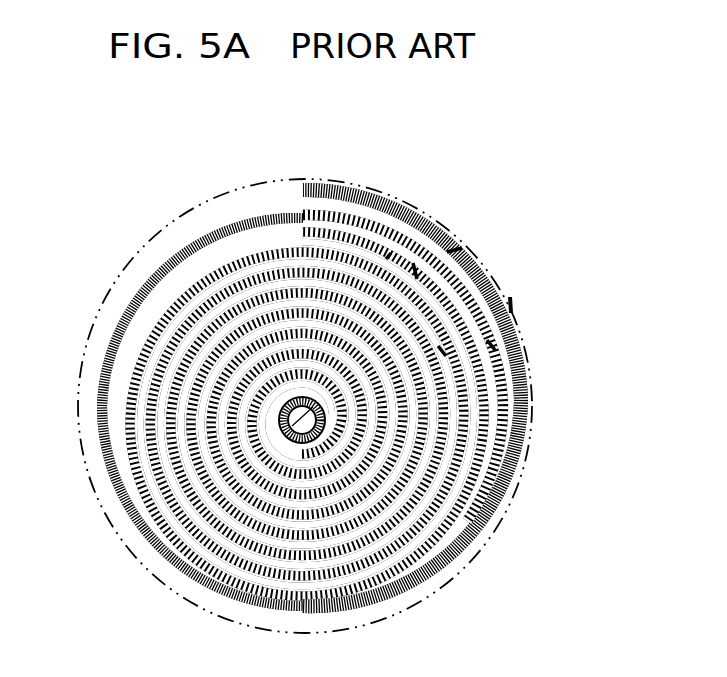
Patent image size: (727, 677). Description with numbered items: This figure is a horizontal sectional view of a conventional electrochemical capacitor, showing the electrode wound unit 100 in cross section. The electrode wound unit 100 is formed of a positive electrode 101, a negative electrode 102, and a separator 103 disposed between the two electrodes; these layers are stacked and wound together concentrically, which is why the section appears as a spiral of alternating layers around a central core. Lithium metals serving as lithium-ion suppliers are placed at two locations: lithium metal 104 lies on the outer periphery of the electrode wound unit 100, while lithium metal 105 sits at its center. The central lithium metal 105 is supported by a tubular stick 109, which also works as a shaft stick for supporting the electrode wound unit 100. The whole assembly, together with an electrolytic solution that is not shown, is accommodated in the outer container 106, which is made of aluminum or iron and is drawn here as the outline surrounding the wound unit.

The electrode wound unit 100 is at (314, 355).
The positive electrode 101 is at (392, 257).
The negative electrode 102 is at (500, 383).
The separator 103 is at (222, 280).
The lithium metal 104 is at (155, 270).
The lithium metal 105 is at (285, 427).
The outer container 106 is at (433, 593).
The tubular stick 109 is at (327, 430).